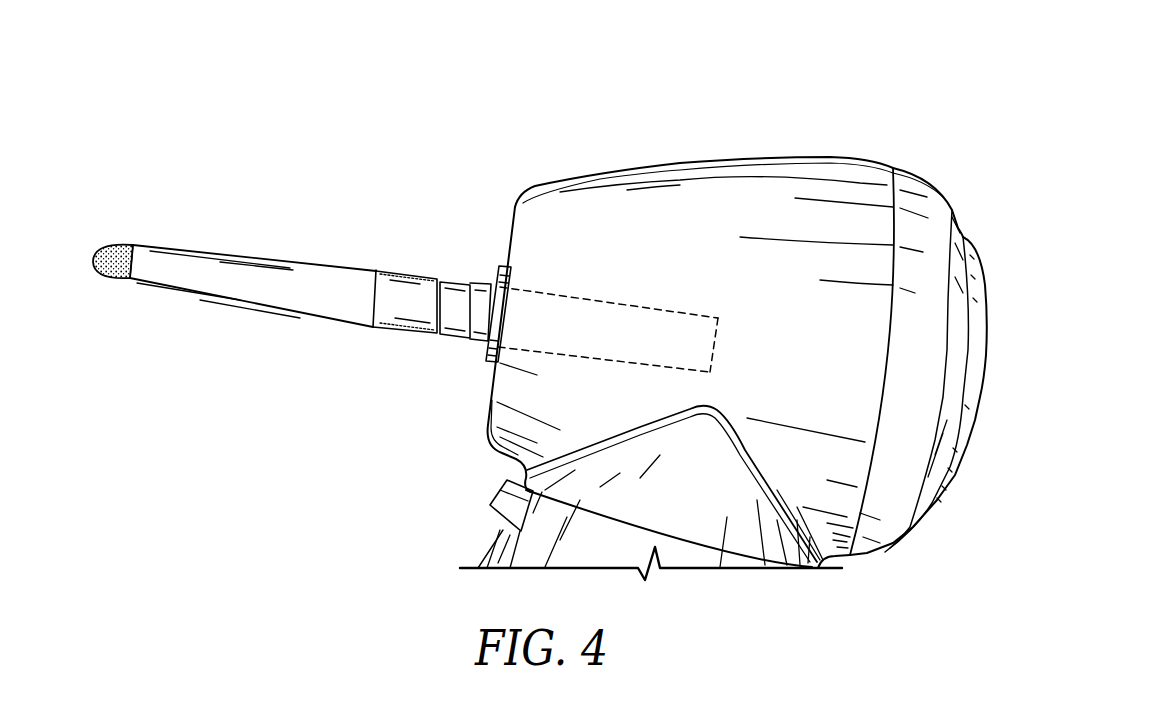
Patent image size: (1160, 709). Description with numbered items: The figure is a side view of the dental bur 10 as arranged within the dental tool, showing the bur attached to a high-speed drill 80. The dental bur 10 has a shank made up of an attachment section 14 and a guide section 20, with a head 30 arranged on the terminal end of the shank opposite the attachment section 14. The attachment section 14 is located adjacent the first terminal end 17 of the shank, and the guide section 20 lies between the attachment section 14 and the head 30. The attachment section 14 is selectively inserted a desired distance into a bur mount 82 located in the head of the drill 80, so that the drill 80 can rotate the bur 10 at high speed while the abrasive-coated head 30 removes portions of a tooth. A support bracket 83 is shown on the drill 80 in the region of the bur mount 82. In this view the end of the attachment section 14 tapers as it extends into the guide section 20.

The dental bur 10 is at (172, 178).
The attachment section 14 is at (634, 310).
The first terminal end 17 is at (708, 312).
The guide section 20 is at (234, 318).
The head 30 is at (108, 290).
The high-speed drill 80 is at (760, 252).
The bur mount 82 is at (503, 250).
The support bracket 83 is at (439, 352).